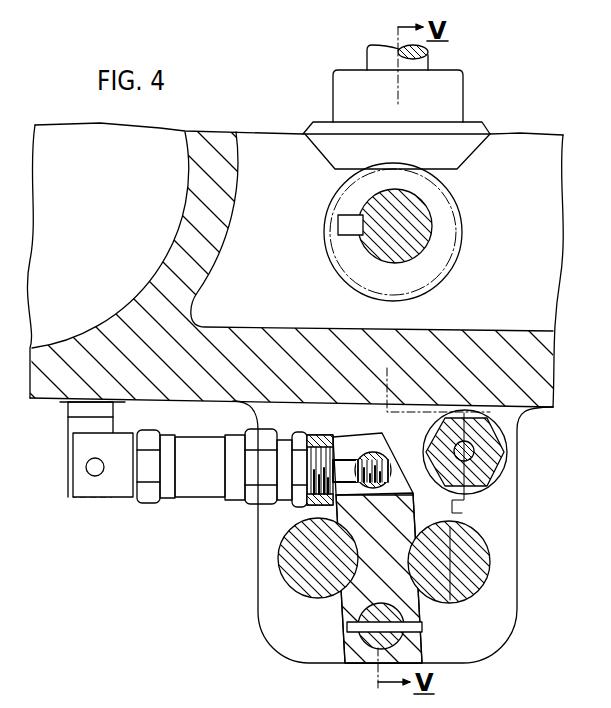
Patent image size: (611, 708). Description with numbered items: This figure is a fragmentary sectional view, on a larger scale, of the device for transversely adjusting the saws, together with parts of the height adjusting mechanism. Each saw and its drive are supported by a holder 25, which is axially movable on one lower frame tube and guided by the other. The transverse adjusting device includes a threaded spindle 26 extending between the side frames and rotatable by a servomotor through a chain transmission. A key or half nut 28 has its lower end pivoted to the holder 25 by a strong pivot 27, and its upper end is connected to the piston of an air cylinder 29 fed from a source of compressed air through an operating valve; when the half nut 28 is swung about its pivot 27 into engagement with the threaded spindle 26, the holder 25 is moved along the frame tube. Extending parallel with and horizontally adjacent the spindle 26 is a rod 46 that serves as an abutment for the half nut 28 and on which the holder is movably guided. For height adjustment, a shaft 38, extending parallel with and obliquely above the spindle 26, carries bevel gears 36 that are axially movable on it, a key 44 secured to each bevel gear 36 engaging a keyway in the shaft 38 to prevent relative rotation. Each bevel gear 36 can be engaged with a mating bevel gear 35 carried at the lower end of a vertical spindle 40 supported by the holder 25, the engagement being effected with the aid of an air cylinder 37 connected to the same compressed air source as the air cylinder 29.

The holder 25 is at (526, 332).
The threaded spindle 26 is at (288, 571).
The pivot 27 is at (360, 663).
The half nut 28 is at (353, 610).
The air cylinder 29 is at (200, 485).
The bevel gear 35 is at (443, 210).
The bevel gear 36 is at (483, 130).
The air cylinder 37 is at (503, 442).
The shaft 38 is at (418, 230).
The vertical spindle 40 is at (423, 63).
The key 44 is at (340, 225).
The rod 46 is at (480, 558).